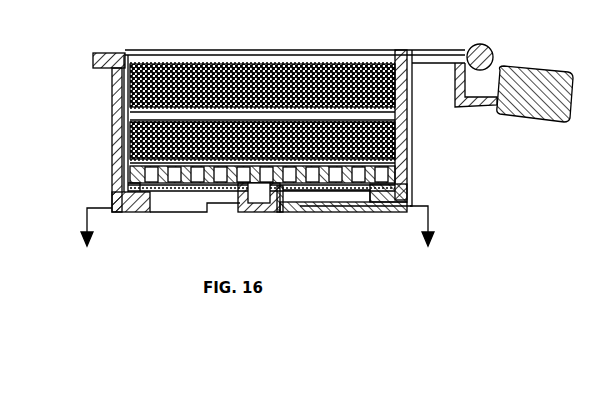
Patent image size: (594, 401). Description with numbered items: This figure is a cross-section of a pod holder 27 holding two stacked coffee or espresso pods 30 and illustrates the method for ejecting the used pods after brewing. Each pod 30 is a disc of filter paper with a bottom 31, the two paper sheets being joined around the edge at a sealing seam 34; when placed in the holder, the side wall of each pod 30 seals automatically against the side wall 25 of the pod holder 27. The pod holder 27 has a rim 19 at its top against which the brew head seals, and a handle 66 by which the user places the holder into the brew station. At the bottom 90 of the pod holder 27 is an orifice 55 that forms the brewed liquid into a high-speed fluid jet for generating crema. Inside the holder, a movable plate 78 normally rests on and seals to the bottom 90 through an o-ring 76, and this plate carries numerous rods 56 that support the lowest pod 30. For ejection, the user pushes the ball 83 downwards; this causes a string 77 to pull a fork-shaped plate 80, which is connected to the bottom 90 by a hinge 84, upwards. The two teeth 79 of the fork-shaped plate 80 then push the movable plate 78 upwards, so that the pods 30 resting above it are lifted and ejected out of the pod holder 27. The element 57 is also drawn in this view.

The rim 19 is at (97, 54).
The side wall 25 is at (128, 123).
The pod holder 27 is at (430, 186).
The beverage pod 30 is at (122, 88).
The bottom 31 is at (232, 67).
The sealing seam 34 is at (381, 50).
The orifice 55 is at (258, 188).
The cylindrical protrusions 56 is at (171, 192).
The divider 57 is at (281, 198).
The handle 66 is at (541, 70).
The o-ring 76 is at (132, 186).
The string 77 is at (414, 140).
The movable plate 78 is at (190, 195).
The teeth 79 is at (227, 206).
The fork-shaped plate 80 is at (316, 207).
The ball 83 is at (494, 49).
The hinge 84 is at (364, 204).
The bottom 90 is at (125, 213).